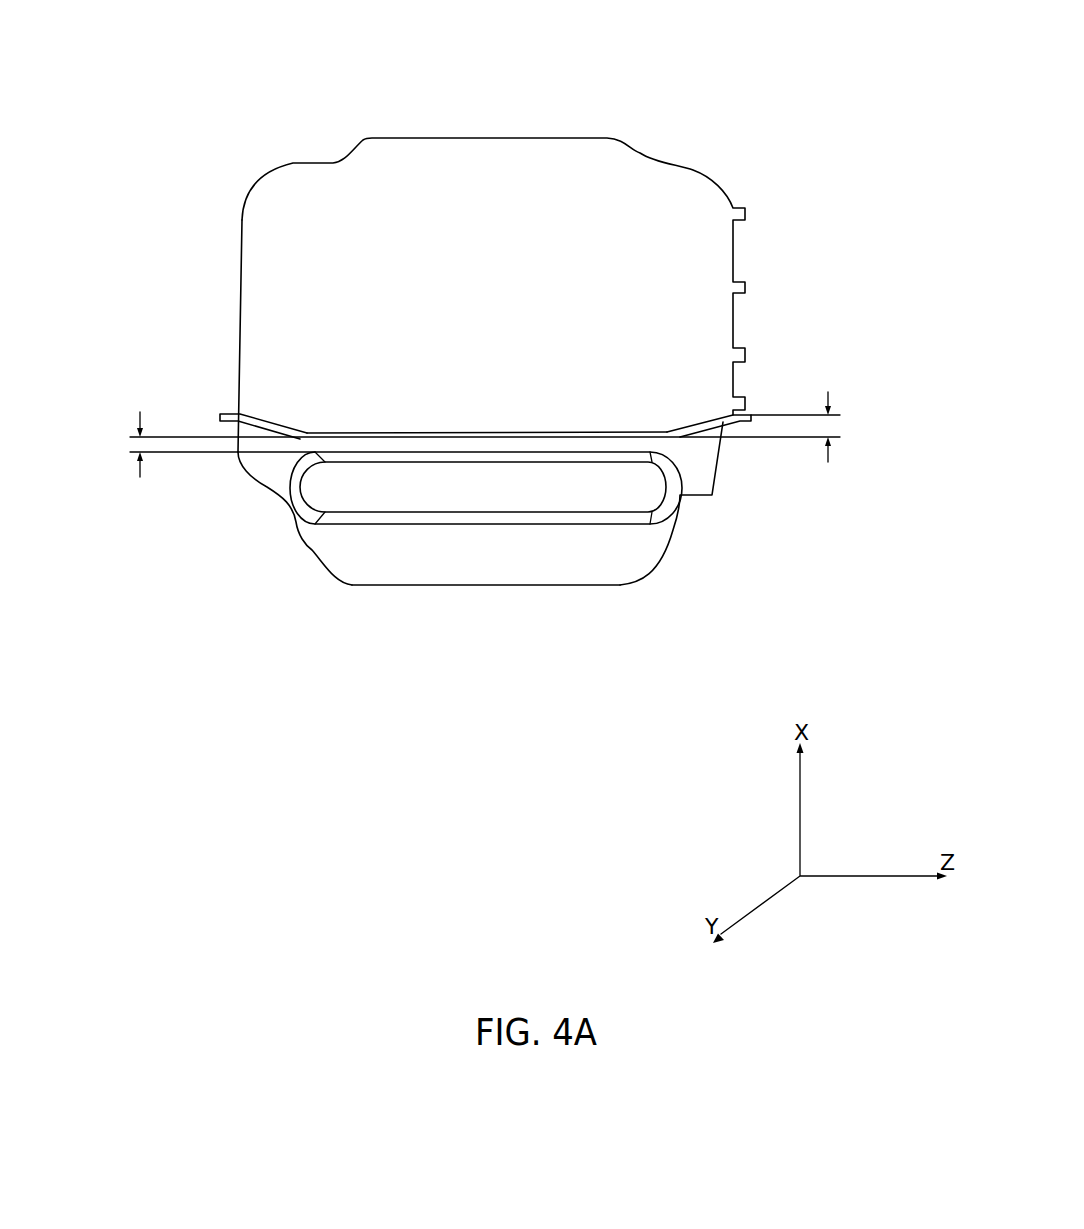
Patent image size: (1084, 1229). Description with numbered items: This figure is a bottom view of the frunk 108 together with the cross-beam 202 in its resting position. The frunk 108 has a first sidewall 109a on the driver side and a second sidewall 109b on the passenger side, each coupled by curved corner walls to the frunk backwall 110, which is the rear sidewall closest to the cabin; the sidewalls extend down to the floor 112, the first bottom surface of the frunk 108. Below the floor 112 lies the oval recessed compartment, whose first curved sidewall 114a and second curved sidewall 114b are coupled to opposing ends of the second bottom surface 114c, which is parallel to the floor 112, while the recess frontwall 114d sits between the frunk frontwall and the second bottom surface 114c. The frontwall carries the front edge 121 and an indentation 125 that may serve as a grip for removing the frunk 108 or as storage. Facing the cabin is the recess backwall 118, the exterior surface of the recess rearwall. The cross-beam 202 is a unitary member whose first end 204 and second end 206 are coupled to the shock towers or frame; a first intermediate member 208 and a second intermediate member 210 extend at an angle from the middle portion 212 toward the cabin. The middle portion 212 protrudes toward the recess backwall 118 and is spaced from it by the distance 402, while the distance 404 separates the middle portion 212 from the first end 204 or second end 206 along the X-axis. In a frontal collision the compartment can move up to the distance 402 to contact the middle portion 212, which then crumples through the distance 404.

The frunk 108 is at (336, 58).
The frunk backwall 110 is at (485, 138).
The floor 112 is at (548, 312).
The first sidewall 109a is at (239, 343).
The second sidewall 109b is at (733, 328).
The first intermediate member 208 is at (242, 413).
The first end 204 is at (220, 413).
The second end 206 is at (745, 415).
The distance 402 is at (138, 441).
The distance 404 is at (828, 428).
The recess backwall 118 is at (507, 470).
The first curved sidewall 114a is at (297, 527).
The second curved sidewall 114b is at (677, 517).
The second bottom surface 114c is at (457, 477).
The recess frontwall 114d is at (397, 527).
The front edge 121 is at (558, 587).
The indentation 125 is at (635, 562).
The middle portion 212 is at (416, 437).
The cross-beam 202 is at (305, 440).
The second intermediate member 210 is at (690, 437).